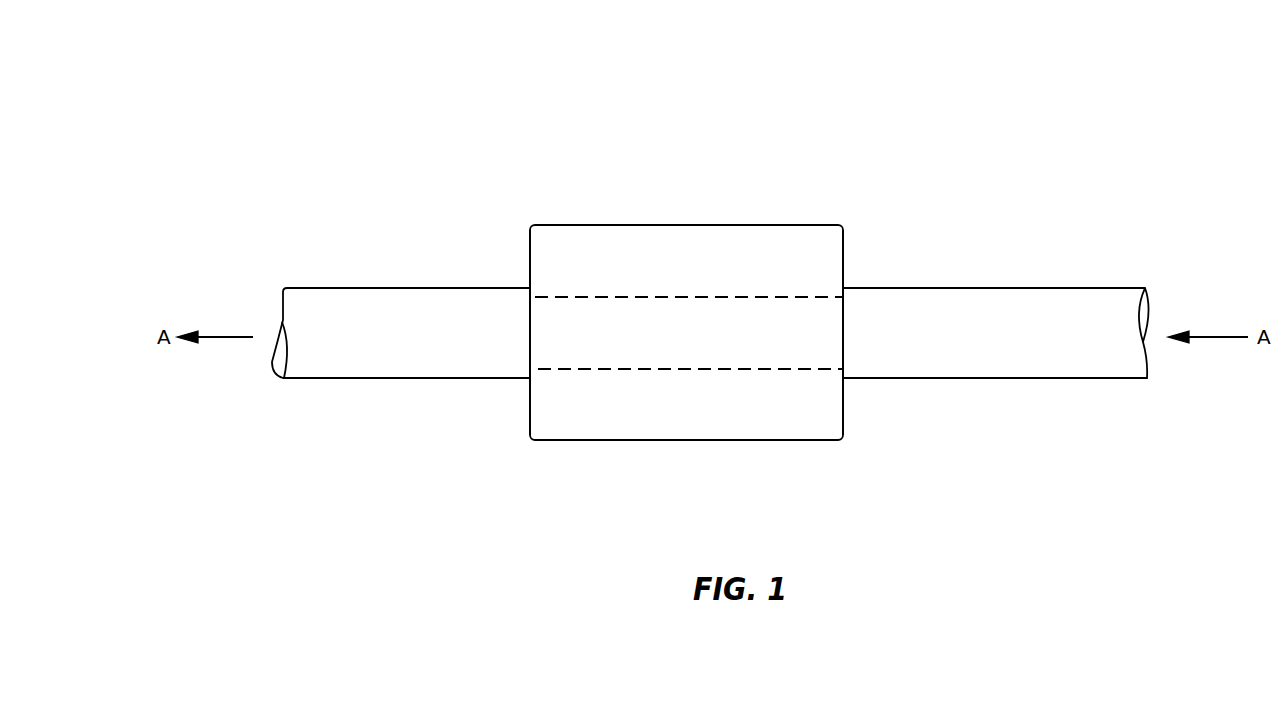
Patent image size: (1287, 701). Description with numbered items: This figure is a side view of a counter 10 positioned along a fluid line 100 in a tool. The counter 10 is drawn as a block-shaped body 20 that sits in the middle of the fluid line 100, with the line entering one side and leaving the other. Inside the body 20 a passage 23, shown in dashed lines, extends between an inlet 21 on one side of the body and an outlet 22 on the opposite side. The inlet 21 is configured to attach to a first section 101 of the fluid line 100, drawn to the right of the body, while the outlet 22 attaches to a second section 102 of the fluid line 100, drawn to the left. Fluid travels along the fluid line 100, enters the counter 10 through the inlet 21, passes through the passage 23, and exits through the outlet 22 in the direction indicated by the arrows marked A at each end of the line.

The counter 10 is at (853, 93).
The body 20 is at (560, 422).
The inlet 21 is at (844, 322).
The outlet 22 is at (529, 318).
The passage 23 is at (747, 297).
The fluid line 100 is at (1038, 283).
The first section 101 is at (955, 347).
The second section 102 is at (405, 357).